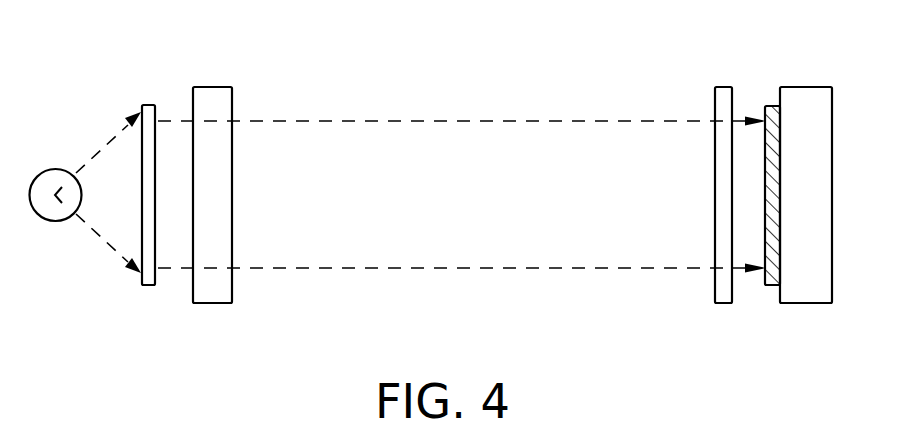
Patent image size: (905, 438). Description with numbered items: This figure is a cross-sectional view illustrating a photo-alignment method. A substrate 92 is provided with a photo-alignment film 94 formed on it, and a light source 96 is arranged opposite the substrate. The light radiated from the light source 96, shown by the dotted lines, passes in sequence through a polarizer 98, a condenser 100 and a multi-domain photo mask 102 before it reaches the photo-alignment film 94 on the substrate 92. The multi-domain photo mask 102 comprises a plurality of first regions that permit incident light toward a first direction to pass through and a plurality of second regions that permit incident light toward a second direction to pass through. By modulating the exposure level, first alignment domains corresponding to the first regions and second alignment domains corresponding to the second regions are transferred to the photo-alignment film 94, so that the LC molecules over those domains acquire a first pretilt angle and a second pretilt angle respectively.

The substrate 92 is at (820, 87).
The photo-alignment film 94 is at (773, 106).
The light source 96 is at (54, 170).
The polarizer 98 is at (148, 105).
The condenser 100 is at (213, 87).
The multi-domain photo mask 102 is at (723, 87).